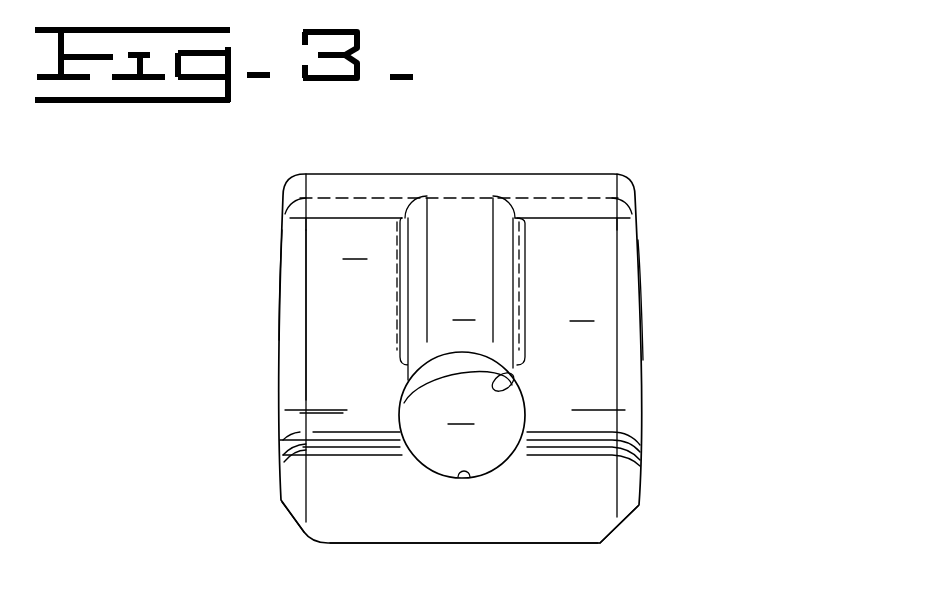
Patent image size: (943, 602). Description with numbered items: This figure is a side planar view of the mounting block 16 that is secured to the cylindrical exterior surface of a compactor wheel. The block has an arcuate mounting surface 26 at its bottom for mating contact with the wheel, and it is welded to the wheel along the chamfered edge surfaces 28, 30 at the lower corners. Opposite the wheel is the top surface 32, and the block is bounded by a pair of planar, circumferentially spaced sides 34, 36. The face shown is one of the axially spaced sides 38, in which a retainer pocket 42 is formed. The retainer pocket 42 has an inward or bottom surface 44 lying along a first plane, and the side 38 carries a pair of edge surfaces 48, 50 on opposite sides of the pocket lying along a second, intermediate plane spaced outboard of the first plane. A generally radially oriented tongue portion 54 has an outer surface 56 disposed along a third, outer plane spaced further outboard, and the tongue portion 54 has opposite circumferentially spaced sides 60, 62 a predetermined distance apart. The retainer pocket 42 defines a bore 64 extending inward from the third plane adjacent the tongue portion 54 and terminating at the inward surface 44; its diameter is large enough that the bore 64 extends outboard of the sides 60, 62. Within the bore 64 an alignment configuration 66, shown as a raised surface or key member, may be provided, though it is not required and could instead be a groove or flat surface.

The mounting block 16 is at (658, 126).
The arcuate mounting surface 26 is at (500, 545).
The chamfered edge surface 28 is at (312, 528).
The chamfered edge surface 30 is at (623, 518).
The top surface 32 is at (382, 174).
The circumferentially spaced side 34 is at (282, 268).
The circumferentially spaced side 36 is at (641, 312).
The axially spaced side 38 is at (325, 348).
The retainer pocket 42 is at (399, 421).
The inward or bottom surface 44 is at (462, 415).
The edge surface 48 is at (336, 238).
The edge surface 50 is at (593, 269).
The tongue portion 54 is at (453, 253).
The outer surface 56 is at (458, 273).
The circumferentially spaced side of tongue portion 60 is at (397, 306).
The circumferentially spaced side of tongue portion 62 is at (512, 267).
The bore 64 is at (507, 392).
The alignment configuration 66 is at (470, 476).